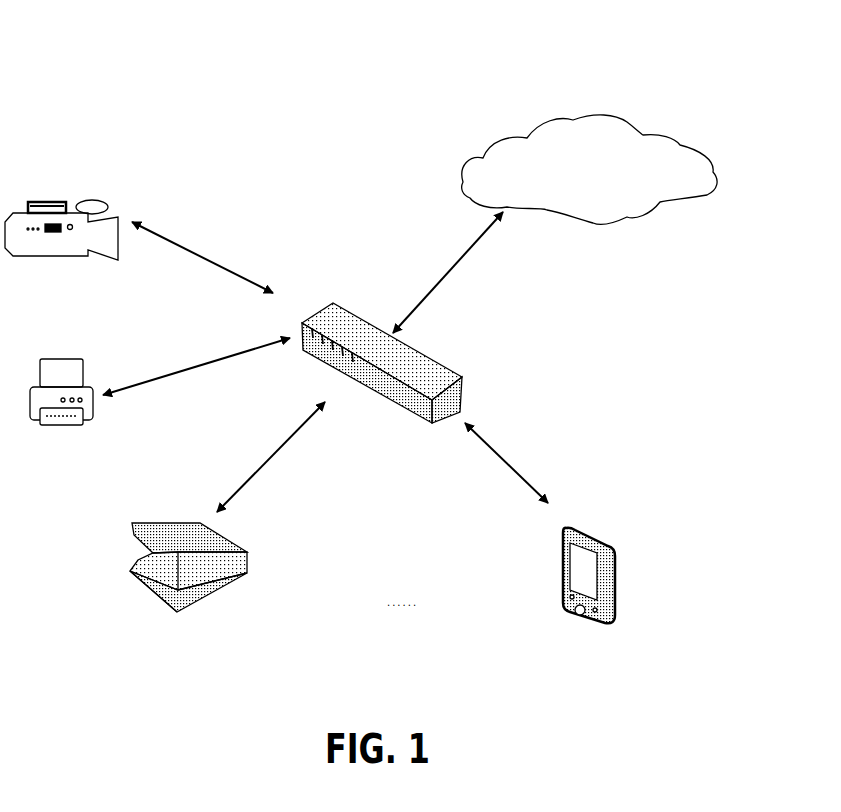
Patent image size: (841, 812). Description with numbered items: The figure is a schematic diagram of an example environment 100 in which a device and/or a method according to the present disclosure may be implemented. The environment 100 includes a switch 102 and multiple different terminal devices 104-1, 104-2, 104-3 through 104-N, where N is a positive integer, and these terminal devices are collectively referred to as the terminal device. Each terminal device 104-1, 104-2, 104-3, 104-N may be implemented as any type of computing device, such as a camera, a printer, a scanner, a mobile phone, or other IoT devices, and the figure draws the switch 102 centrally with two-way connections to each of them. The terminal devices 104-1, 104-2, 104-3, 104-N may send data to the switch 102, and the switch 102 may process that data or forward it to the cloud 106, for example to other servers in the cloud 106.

The example environment 100 is at (158, 55).
The switch 102 is at (462, 370).
The cloud 106 is at (643, 135).
The terminal device 104-1 is at (113, 212).
The terminal device 104-2 is at (62, 359).
The terminal device 104-3 is at (233, 540).
The terminal device 104-N is at (607, 543).